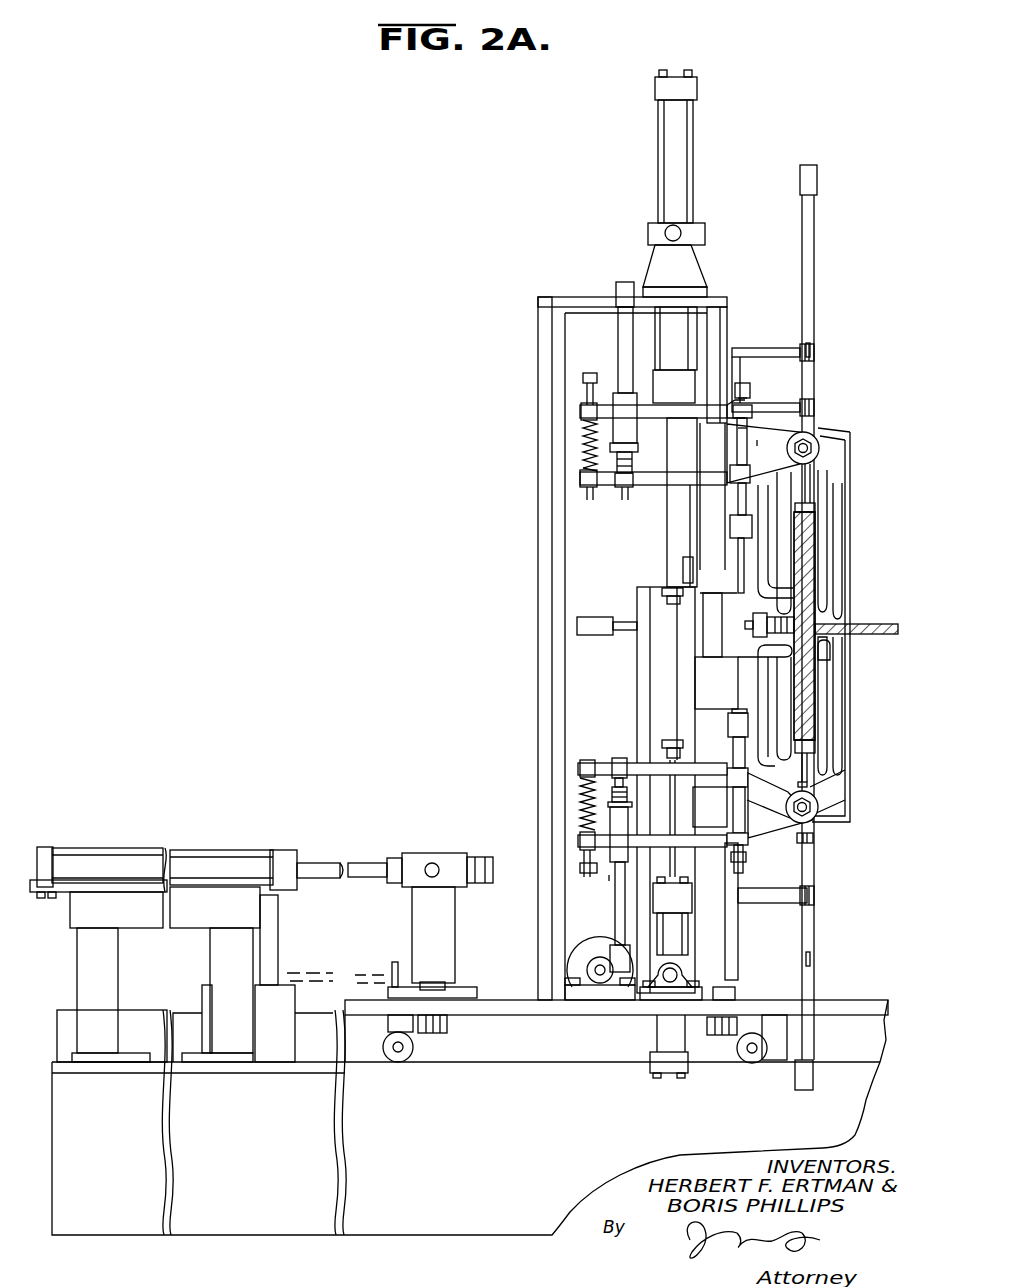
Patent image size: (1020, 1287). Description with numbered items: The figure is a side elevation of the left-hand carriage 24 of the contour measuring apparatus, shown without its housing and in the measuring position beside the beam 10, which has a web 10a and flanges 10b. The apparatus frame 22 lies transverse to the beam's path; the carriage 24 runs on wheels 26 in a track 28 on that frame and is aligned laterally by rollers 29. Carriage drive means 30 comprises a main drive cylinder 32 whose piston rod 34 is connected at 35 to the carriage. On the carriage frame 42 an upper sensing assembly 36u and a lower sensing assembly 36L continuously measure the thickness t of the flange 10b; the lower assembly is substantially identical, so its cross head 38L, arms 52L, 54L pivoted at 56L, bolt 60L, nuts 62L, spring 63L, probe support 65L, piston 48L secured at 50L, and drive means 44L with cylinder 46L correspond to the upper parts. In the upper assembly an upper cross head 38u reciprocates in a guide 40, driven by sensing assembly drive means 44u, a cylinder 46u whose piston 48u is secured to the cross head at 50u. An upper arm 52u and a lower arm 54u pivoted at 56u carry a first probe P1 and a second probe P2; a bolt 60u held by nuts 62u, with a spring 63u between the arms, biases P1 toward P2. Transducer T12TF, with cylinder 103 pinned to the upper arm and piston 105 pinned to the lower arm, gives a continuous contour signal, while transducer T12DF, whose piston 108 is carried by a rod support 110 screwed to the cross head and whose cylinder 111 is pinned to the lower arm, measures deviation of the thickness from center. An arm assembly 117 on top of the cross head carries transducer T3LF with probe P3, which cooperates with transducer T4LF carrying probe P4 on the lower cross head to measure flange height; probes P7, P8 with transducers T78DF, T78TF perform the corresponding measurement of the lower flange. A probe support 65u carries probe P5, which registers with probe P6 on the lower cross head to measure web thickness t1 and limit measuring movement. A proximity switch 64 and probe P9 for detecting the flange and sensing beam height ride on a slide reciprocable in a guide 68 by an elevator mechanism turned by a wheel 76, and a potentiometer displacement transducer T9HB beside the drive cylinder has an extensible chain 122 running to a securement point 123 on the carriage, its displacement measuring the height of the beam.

The sensing assembly drive means 44u is at (701, 160).
The cylinder 46u is at (684, 187).
The upper sensing assembly 36u is at (746, 335).
The transducer T3LF is at (818, 333).
The piston of transducer T12DF 108 is at (744, 380).
The rod support 110 is at (748, 405).
The arm assembly 117 is at (779, 360).
The cylinder of transducer T12DF 111 is at (742, 428).
The transducer T12TF is at (612, 372).
The upper arm 52u is at (642, 395).
The nuts 62u is at (582, 380).
The transducer T12DF is at (758, 437).
The cylinder of transducer T12TF 103 is at (583, 407).
The probe support 65u is at (819, 443).
The spring 63u is at (583, 438).
The pivot 56u is at (820, 455).
The bolt 60u is at (583, 482).
The piston 48u is at (663, 510).
The lower arm 54u is at (739, 490).
The probe P3 is at (816, 507).
The carriage 24 is at (550, 528).
The flange 10b is at (818, 522).
The piston of transducer T12TF 105 is at (602, 492).
The upper cross head 38u is at (690, 532).
The second probe P2 is at (826, 598).
The securement point 50u is at (665, 590).
The switch 64 is at (733, 600).
The first probe P1 is at (788, 596).
The probe P5 is at (860, 618).
The web 10a is at (870, 622).
The potentiometer displacement type transducer T9HB is at (577, 620).
The probe P9 is at (754, 633).
The thickness t is at (829, 538).
The thickness t1 is at (892, 605).
The frame 42 is at (551, 650).
The guide 40 is at (700, 648).
The registering probe P6 is at (832, 645).
The probe P7 is at (770, 652).
The guide 68 is at (637, 689).
The probe P8 is at (828, 668).
The lower cross head 38L is at (735, 702).
The beam 10 is at (817, 715).
The lower cross bar 60L is at (585, 758).
The lower stop nut 50L is at (662, 740).
The probe P4 is at (817, 746).
The lower spring 63L is at (580, 782).
The lower bracket 65L is at (850, 770).
The lower adjusting screw 62L is at (586, 832).
The lower sleeve 48L is at (673, 796).
The lower guide rod 52L is at (840, 779).
The lower pivot pin 54L is at (846, 802).
The lower lever 56L is at (809, 822).
The transducer T78DF is at (748, 845).
The transducer T78TF is at (606, 879).
The wheel 76 is at (580, 952).
The transducer T4LF is at (812, 935).
The lower sensing assembly 36L is at (742, 906).
The main drive cylinder 32 is at (117, 858).
The carriage drive means 30 is at (211, 846).
The piston rod 34 is at (324, 859).
The connection 35 is at (432, 852).
The extensible chain 122 is at (313, 978).
The securement point 123 is at (396, 985).
The rollers 29 is at (447, 1028).
The lower hydraulic cylinder 44L is at (653, 1032).
The wheels 26 is at (398, 1064).
The track 28 is at (525, 1063).
The lower cylinder end 46L is at (656, 1074).
The frame 22 is at (282, 1222).